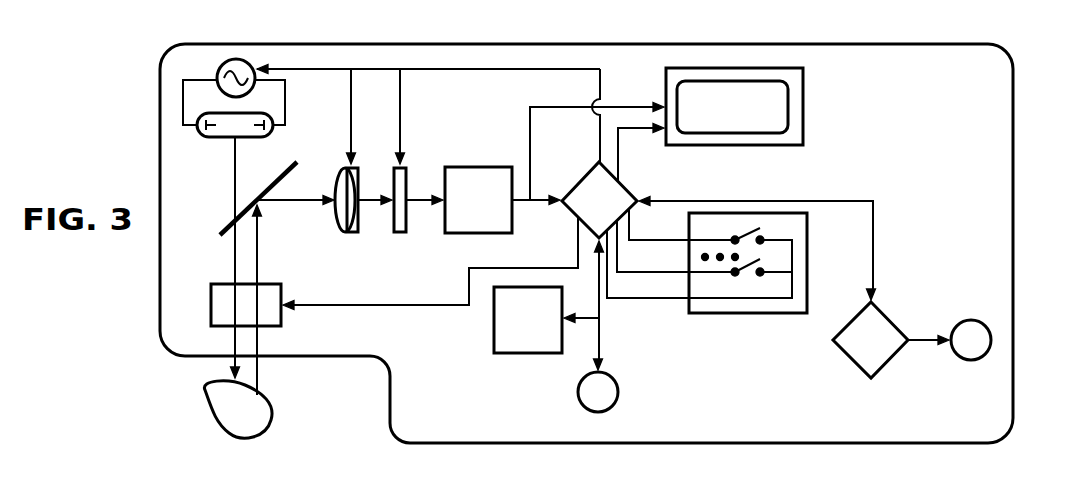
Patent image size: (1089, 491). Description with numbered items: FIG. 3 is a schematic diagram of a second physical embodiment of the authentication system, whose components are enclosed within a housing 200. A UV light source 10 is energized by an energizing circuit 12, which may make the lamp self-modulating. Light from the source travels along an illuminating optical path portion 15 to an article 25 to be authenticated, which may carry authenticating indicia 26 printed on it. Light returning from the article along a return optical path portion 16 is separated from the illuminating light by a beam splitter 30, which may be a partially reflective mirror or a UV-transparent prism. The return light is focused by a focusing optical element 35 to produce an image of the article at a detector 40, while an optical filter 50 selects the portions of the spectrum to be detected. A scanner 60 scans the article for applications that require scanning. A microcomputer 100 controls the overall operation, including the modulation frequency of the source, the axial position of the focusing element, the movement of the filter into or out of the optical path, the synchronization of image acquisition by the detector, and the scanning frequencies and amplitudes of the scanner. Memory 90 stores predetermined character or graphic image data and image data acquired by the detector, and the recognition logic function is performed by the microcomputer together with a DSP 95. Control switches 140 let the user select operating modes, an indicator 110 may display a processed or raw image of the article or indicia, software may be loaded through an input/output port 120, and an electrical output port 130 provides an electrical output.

The UV light source 10 is at (262, 115).
The energizing circuit 12 is at (225, 66).
The illuminating optical path portion 15 is at (235, 167).
The return optical path portion 16 is at (258, 245).
The article 25 is at (205, 390).
The authenticating indicia 26 is at (256, 412).
The beam splitter 30 is at (228, 230).
The focusing optical element 35 is at (338, 185).
The detector 40 is at (494, 214).
The optical filter 50 is at (404, 172).
The scanner 60 is at (278, 284).
The memory 90 is at (544, 334).
The DSP 95 is at (887, 353).
The microcomputer 100 is at (621, 214).
The indicator 110 is at (755, 118).
The input/output port 120 is at (613, 404).
The electrical output port 130 is at (962, 322).
The control switches 140 is at (706, 313).
The housing 200 is at (1014, 148).